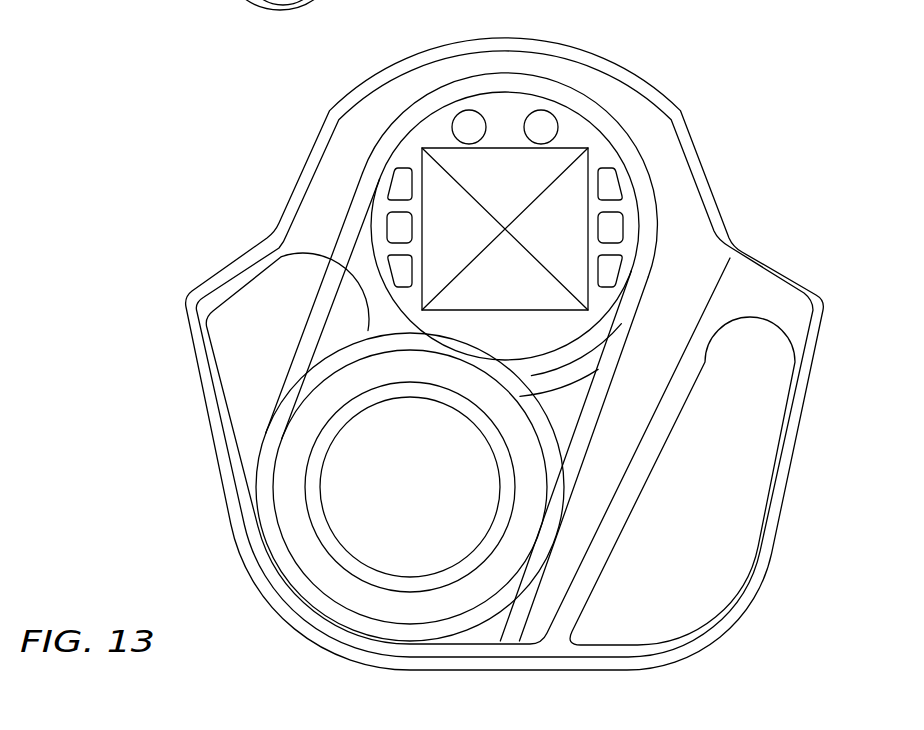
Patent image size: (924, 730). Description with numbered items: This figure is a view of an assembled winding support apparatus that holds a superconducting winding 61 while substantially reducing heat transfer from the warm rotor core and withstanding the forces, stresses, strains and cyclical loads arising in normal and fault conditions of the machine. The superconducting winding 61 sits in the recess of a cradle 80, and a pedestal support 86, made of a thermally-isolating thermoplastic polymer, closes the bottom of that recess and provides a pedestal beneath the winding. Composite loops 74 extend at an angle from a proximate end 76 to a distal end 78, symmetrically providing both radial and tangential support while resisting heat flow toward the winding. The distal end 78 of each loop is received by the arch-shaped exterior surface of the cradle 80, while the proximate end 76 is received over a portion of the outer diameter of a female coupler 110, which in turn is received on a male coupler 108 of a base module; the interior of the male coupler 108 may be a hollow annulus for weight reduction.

The superconducting winding 61 is at (492, 188).
The loop 74 is at (340, 230).
The proximate end 76 is at (253, 8).
The distal end 78 is at (507, 75).
The cradle 80 is at (573, 137).
The pedestal support 86 is at (465, 322).
The male coupler 108 is at (317, 478).
The female coupler 110 is at (303, 544).